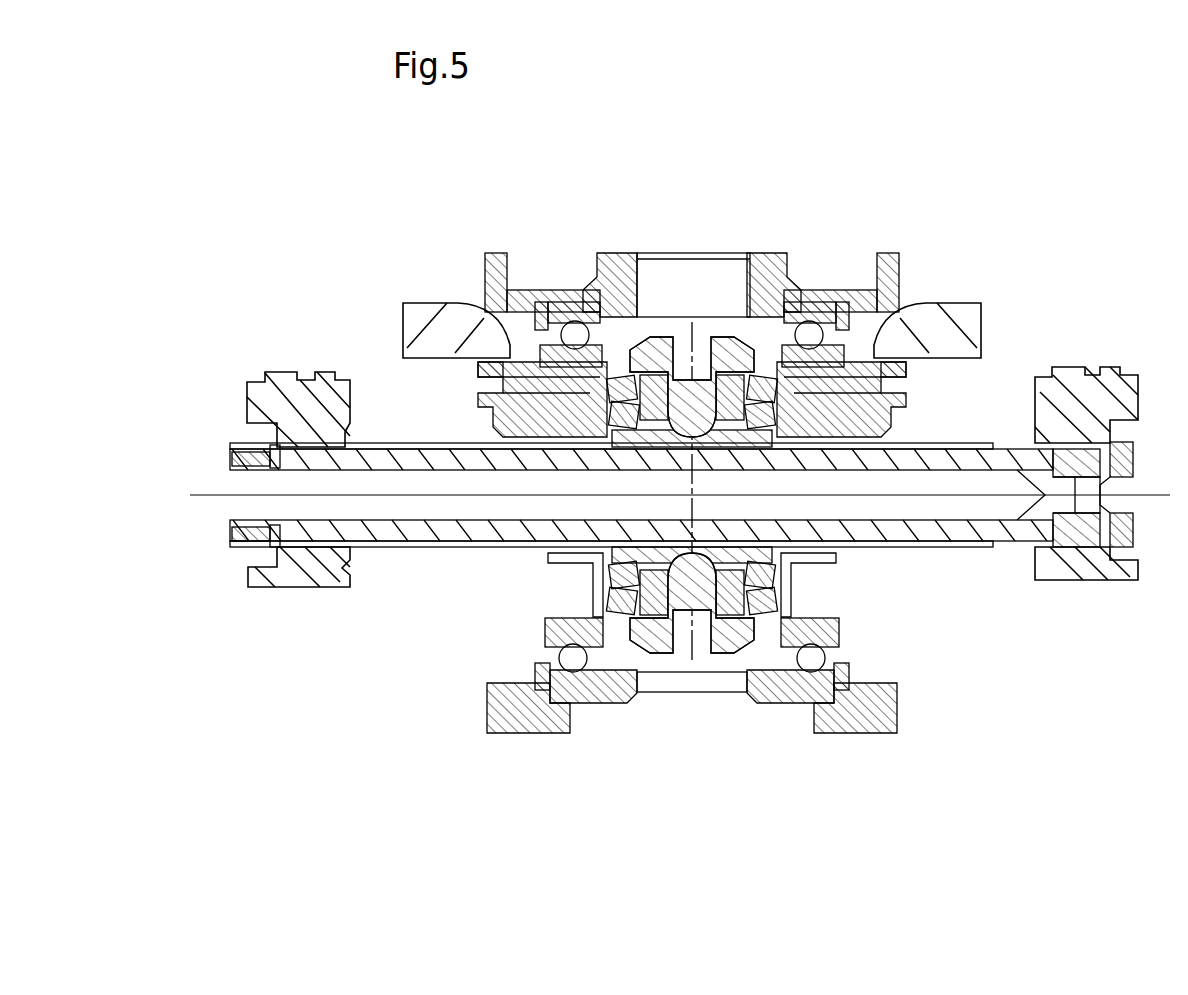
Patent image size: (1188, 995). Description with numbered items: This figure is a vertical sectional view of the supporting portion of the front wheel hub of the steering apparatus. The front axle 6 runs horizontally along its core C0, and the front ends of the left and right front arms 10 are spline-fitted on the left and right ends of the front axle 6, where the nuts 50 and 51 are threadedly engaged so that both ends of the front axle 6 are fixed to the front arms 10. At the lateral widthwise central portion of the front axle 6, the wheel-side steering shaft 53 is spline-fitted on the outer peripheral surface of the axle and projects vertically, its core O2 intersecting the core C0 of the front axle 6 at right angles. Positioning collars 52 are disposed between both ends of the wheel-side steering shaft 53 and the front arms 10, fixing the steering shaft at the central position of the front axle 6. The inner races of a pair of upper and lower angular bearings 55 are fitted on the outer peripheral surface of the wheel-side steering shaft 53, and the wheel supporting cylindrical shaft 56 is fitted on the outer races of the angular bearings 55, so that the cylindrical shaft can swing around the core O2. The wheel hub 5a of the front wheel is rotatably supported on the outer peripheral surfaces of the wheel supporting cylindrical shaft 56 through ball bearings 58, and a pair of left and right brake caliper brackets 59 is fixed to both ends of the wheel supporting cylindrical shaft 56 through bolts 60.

The wheel hub 5a is at (840, 290).
The front axle 6 is at (468, 528).
The front arm 10 is at (303, 567).
The nut 50 is at (247, 543).
The nut 51 is at (1133, 530).
The positioning collar 52 is at (408, 547).
The wheel-side steering shaft 53 is at (660, 337).
The angular bearing 55 is at (762, 380).
The wheel supporting cylindrical shaft 56 is at (513, 415).
The ball bearing 58 is at (573, 330).
The brake caliper bracket 59 is at (447, 337).
The bolt 60 is at (510, 384).
The core of the front axle C0 is at (208, 493).
The core of the wheel-side steering shaft O2 is at (692, 655).